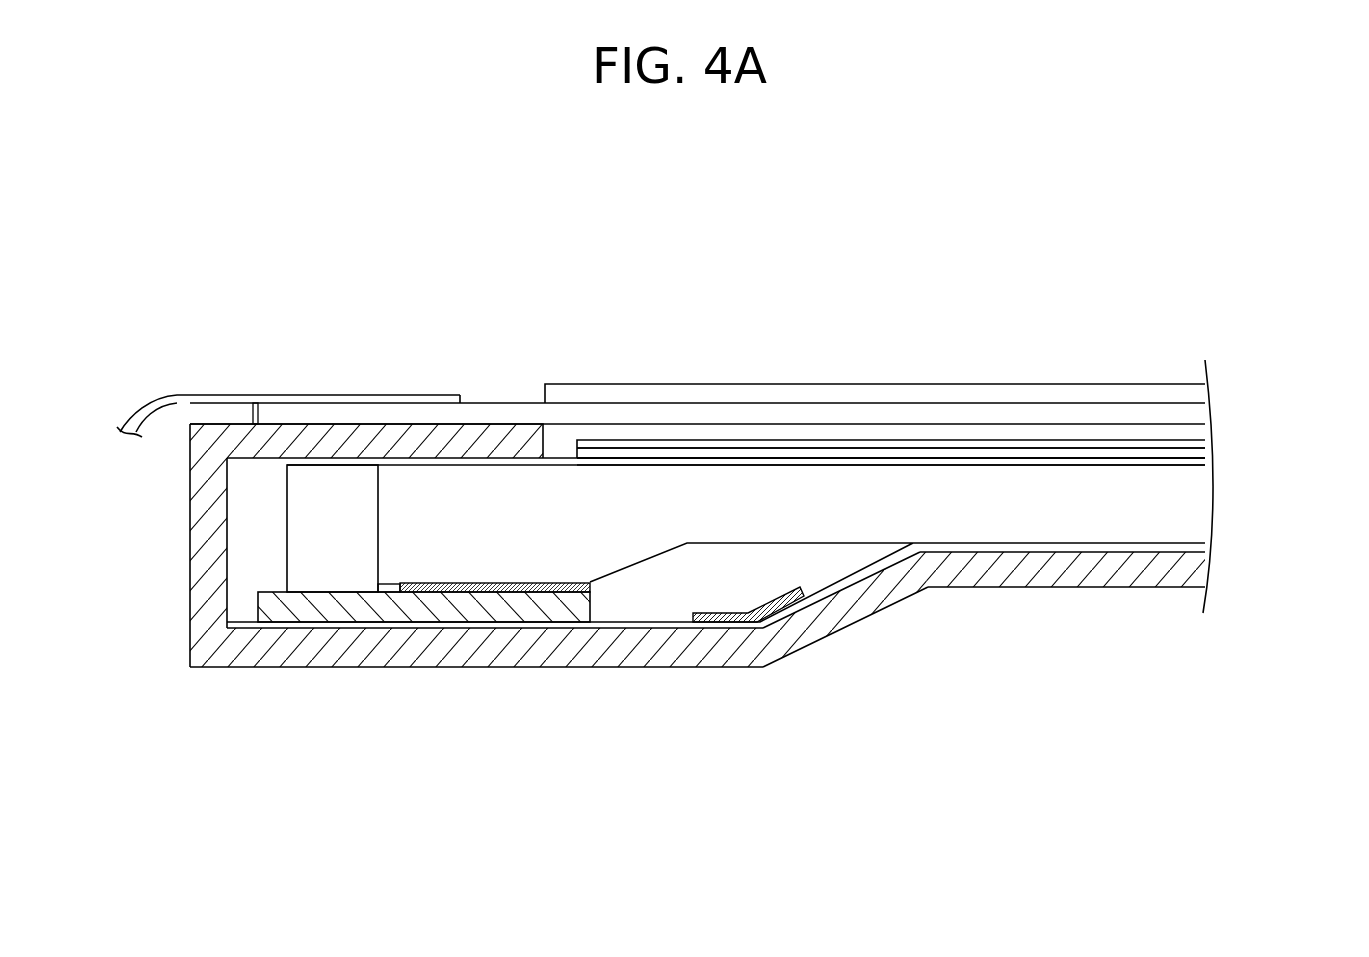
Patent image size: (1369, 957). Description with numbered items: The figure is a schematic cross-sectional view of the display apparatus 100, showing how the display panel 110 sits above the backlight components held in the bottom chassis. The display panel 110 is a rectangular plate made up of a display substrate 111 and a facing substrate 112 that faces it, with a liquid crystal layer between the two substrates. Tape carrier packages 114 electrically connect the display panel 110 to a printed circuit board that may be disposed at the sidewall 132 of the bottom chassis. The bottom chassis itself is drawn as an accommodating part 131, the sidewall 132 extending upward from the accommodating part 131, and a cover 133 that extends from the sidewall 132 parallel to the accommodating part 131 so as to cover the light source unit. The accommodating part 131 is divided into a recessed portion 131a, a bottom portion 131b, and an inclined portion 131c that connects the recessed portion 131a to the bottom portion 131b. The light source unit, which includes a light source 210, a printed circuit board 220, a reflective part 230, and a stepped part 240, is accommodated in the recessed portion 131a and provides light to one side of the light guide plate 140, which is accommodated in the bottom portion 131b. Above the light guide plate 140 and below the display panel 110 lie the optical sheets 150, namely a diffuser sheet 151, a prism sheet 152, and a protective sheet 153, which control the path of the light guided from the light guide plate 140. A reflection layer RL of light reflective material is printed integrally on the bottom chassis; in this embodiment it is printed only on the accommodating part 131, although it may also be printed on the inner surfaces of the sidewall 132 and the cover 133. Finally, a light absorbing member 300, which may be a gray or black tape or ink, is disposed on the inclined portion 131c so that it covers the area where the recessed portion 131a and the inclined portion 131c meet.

The display apparatus 100 is at (1062, 279).
The display panel 110 is at (623, 313).
The display substrate 111 is at (508, 415).
The facing substrate 112 is at (597, 395).
The tape carrier package 114 is at (370, 400).
The accommodating part 131 is at (1013, 738).
The recessed portion 131a is at (670, 652).
The bottom portion 131b is at (990, 572).
The inclined portion 131c is at (833, 606).
The sidewall 132 is at (210, 522).
The cover 133 is at (286, 440).
The light guide plate 140 is at (1195, 505).
The optical sheets 150 is at (1297, 422).
The diffuser sheet 151 is at (1197, 456).
The prism sheet 152 is at (1197, 450).
The protective sheet 153 is at (1197, 445).
The reflection layer RL is at (1207, 546).
The light source 210 is at (333, 568).
The printed circuit board 220 is at (398, 607).
The reflective part 230 is at (457, 592).
The stepped part 240 is at (515, 592).
The light absorbing member 300 is at (723, 611).